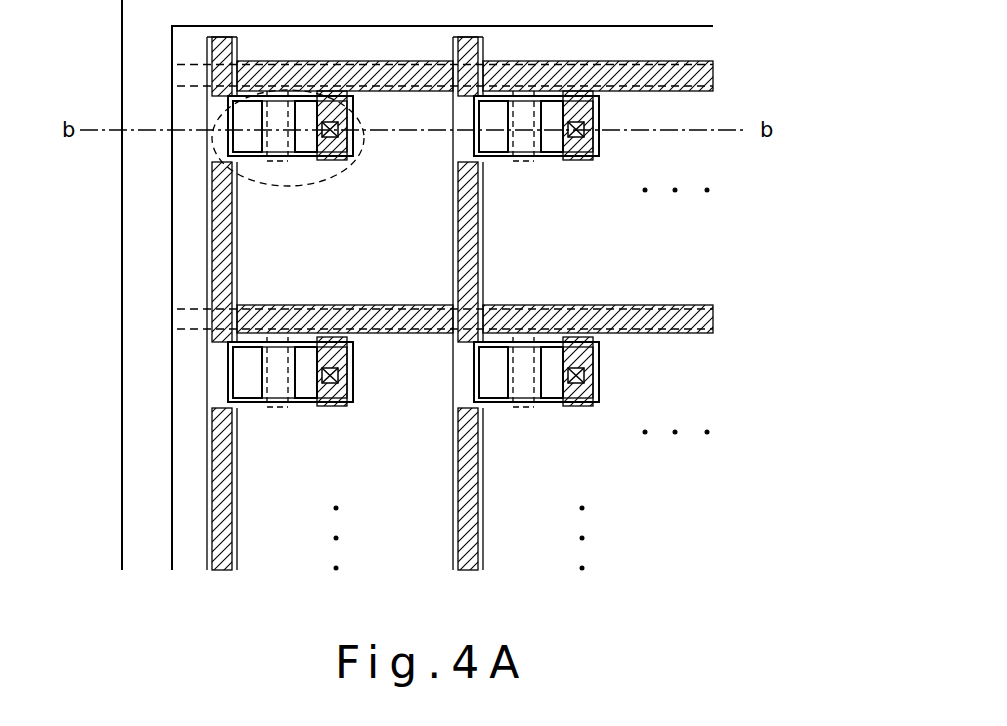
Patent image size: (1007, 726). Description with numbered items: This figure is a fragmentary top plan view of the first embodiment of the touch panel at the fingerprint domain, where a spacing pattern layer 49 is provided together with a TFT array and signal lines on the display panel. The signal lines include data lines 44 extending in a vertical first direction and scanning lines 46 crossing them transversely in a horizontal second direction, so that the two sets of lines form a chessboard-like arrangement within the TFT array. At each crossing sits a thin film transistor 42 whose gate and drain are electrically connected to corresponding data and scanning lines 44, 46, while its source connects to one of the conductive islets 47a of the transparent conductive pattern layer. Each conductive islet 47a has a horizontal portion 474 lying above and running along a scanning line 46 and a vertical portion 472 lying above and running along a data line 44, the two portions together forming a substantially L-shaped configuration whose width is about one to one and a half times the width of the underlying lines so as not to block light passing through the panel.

The spacing pattern layer 49 is at (168, 12).
The scanning lines 46 is at (177, 83).
The conductive islets 47a is at (610, 67).
The thin film transistors 42 is at (297, 190).
The vertical portion 472 is at (215, 250).
The horizontal portion 474 is at (347, 317).
The data lines 44 is at (220, 402).